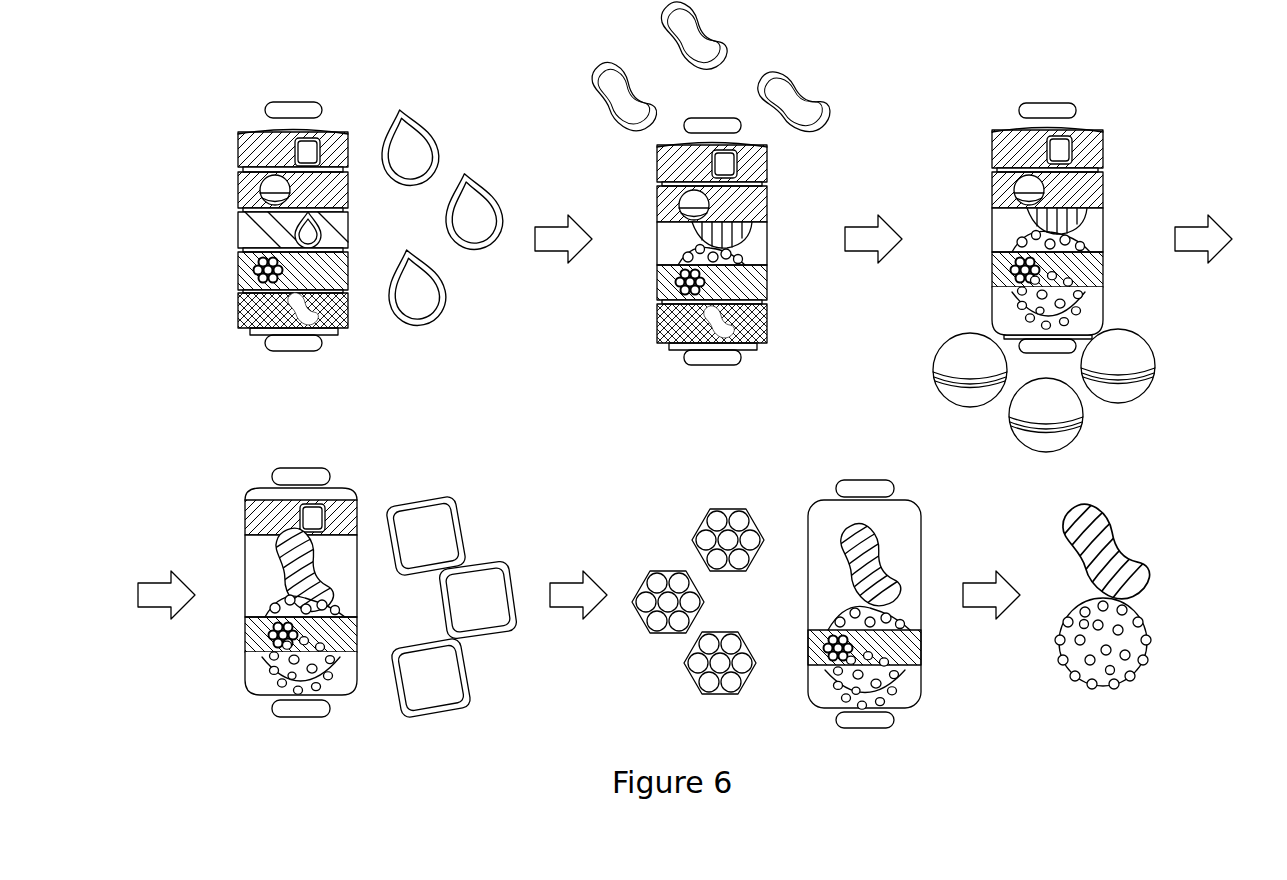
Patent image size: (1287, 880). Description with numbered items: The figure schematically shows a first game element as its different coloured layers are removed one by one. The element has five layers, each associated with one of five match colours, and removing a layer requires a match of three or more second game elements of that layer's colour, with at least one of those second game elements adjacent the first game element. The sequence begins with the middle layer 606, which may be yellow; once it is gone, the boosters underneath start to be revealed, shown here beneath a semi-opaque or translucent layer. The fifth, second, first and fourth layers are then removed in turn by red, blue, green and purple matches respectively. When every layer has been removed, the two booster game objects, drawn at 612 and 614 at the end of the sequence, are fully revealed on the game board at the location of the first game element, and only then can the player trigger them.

The middle layer 606 is at (298, 238).
The first dispensed item 612 is at (1140, 560).
The second dispensed item 614 is at (1133, 613).